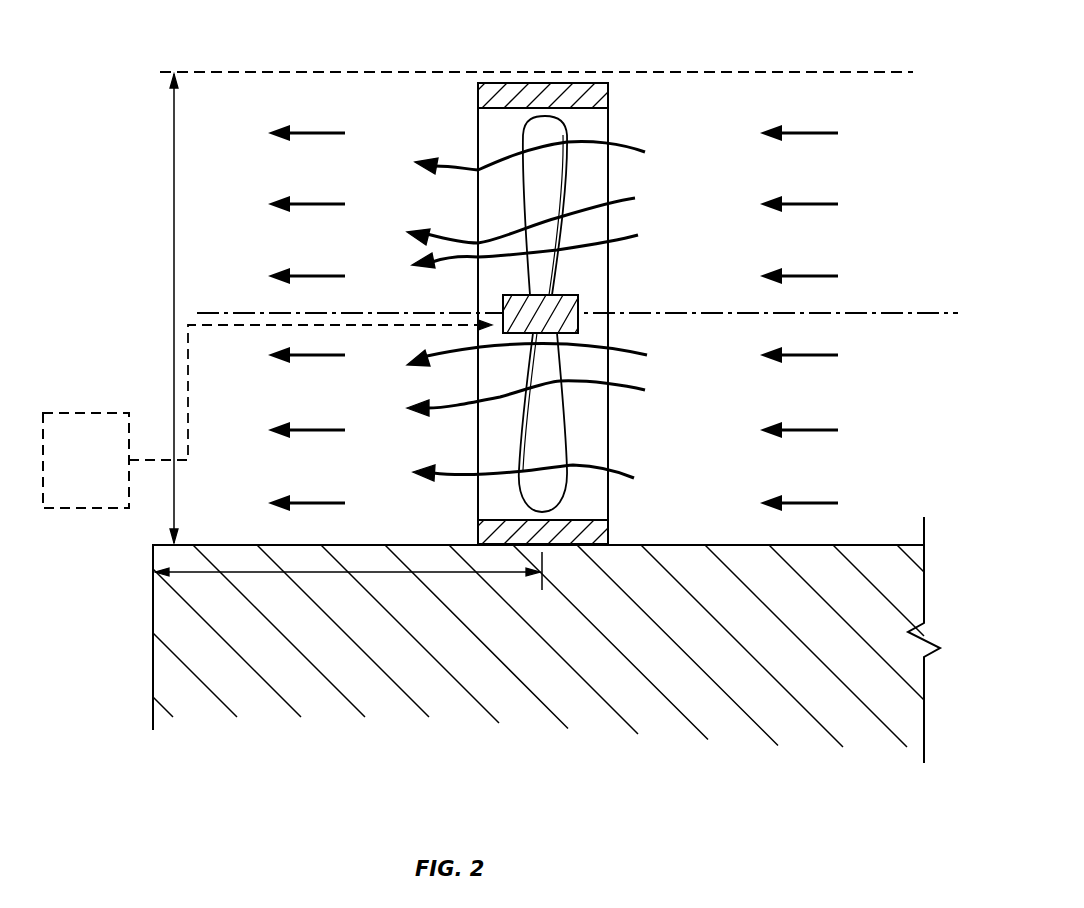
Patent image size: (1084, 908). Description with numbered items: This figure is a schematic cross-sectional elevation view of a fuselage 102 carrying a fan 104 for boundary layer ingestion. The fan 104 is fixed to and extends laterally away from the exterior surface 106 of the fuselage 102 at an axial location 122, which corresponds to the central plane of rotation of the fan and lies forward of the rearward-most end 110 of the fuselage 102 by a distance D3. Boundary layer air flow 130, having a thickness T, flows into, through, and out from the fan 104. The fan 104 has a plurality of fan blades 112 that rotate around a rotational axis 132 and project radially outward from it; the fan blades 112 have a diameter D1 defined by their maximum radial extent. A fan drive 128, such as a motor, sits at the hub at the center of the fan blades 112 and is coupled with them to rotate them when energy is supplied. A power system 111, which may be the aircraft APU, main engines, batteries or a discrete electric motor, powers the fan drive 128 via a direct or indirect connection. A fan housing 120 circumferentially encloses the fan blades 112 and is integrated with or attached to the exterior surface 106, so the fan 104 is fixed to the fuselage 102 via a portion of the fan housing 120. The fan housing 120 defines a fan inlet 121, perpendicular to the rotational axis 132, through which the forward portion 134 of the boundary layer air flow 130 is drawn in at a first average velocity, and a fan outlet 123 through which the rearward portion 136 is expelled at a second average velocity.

The fuselage 102 is at (251, 540).
The fan 104 is at (612, 268).
The exterior surface 106 is at (877, 545).
The rearward-most end 110 is at (153, 600).
The power system 111 is at (83, 435).
The fan blades 112 is at (553, 175).
The fan housing 120 is at (545, 92).
The fan inlet 121 is at (608, 122).
The axial location 122 is at (547, 547).
The fan outlet 123 is at (478, 133).
The fan drive 128 is at (570, 300).
The boundary layer air flow 130 is at (890, 133).
The rotational axis 132 is at (893, 313).
The forward portion 134 is at (830, 132).
The rearward portion 136 is at (327, 133).
The thickness T is at (174, 222).
The diameter D1 is at (505, 106).
The distance D3 is at (310, 575).